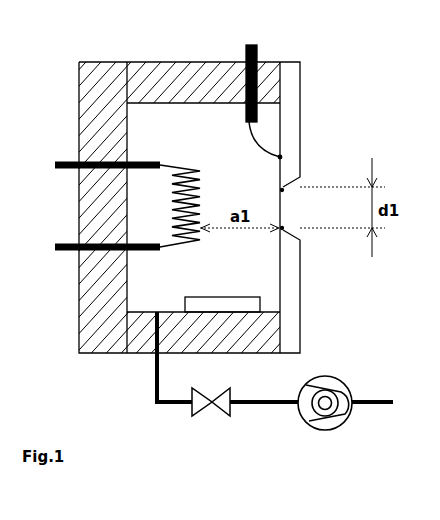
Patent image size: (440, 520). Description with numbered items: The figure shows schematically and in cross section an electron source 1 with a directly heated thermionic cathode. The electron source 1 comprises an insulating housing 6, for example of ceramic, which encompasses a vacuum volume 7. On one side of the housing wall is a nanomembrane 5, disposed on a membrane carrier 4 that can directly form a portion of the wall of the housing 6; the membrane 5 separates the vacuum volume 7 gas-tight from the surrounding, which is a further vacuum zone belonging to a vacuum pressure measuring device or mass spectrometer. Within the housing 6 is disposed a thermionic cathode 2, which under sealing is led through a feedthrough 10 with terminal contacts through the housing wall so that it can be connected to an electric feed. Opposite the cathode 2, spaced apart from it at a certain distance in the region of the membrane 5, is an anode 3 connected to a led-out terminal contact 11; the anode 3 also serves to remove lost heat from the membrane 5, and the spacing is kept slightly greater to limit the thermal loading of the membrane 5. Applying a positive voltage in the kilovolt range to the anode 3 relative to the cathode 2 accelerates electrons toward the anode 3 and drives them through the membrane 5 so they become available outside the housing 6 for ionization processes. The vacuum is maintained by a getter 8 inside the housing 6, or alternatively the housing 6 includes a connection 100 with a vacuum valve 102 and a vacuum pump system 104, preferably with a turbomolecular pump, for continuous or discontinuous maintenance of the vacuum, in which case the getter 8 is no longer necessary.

The electron source 1 is at (318, 89).
The cathode 2 is at (197, 196).
The anode 3 is at (279, 152).
The membrane carrier 4 is at (305, 163).
The nanomembrane 5 is at (302, 209).
The insulating housing 6 is at (92, 119).
The vacuum volume 7 is at (160, 139).
The getter 8 is at (220, 296).
The feedthrough 10 is at (63, 170).
The terminal contact 11 is at (257, 47).
The connection 100 is at (150, 377).
The vacuum valve 102 is at (200, 418).
The vacuum pump system 104 is at (305, 430).